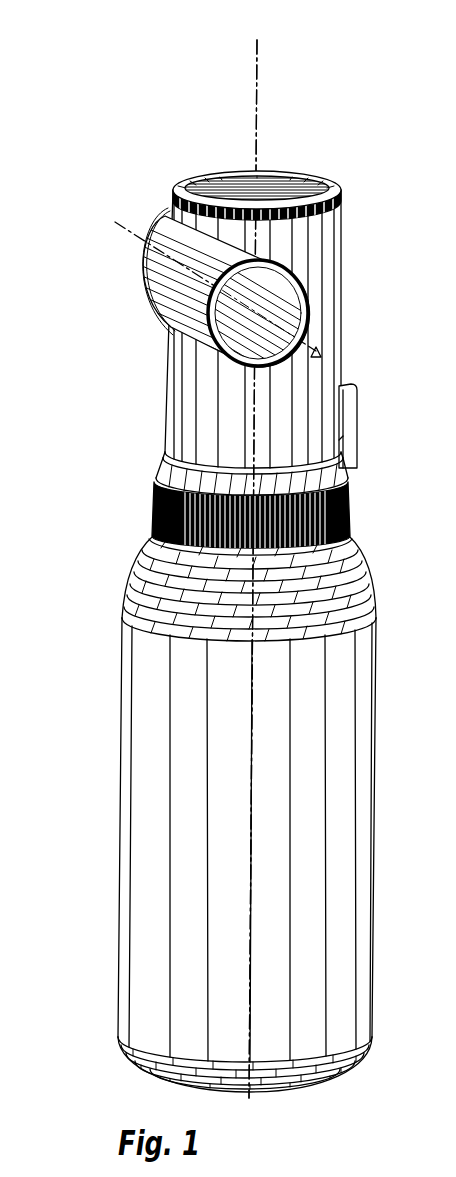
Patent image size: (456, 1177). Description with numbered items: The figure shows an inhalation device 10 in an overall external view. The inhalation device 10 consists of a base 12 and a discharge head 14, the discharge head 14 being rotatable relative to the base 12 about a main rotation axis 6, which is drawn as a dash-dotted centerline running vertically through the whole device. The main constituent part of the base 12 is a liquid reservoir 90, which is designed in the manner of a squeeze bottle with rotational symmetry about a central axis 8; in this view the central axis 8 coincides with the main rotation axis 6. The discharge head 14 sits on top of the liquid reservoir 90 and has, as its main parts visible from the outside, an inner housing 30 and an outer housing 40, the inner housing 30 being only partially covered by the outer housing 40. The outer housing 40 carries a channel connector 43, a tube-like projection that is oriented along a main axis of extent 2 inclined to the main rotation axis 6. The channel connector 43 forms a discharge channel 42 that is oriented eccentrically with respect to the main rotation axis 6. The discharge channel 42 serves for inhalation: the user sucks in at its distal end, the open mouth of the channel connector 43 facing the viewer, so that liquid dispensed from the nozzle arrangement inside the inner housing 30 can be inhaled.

The main axis of extent 2 is at (130, 240).
The main rotation axis 6 is at (260, 87).
The central axis 8 is at (253, 569).
The inhalation device 10 is at (163, 175).
The base 12 is at (145, 508).
The discharge head 14 is at (160, 384).
The inner housing 30 is at (325, 370).
The outer housing 40 is at (328, 255).
The discharge channel 42 is at (215, 312).
The channel connector 43 is at (197, 288).
The liquid reservoir 90 is at (362, 662).